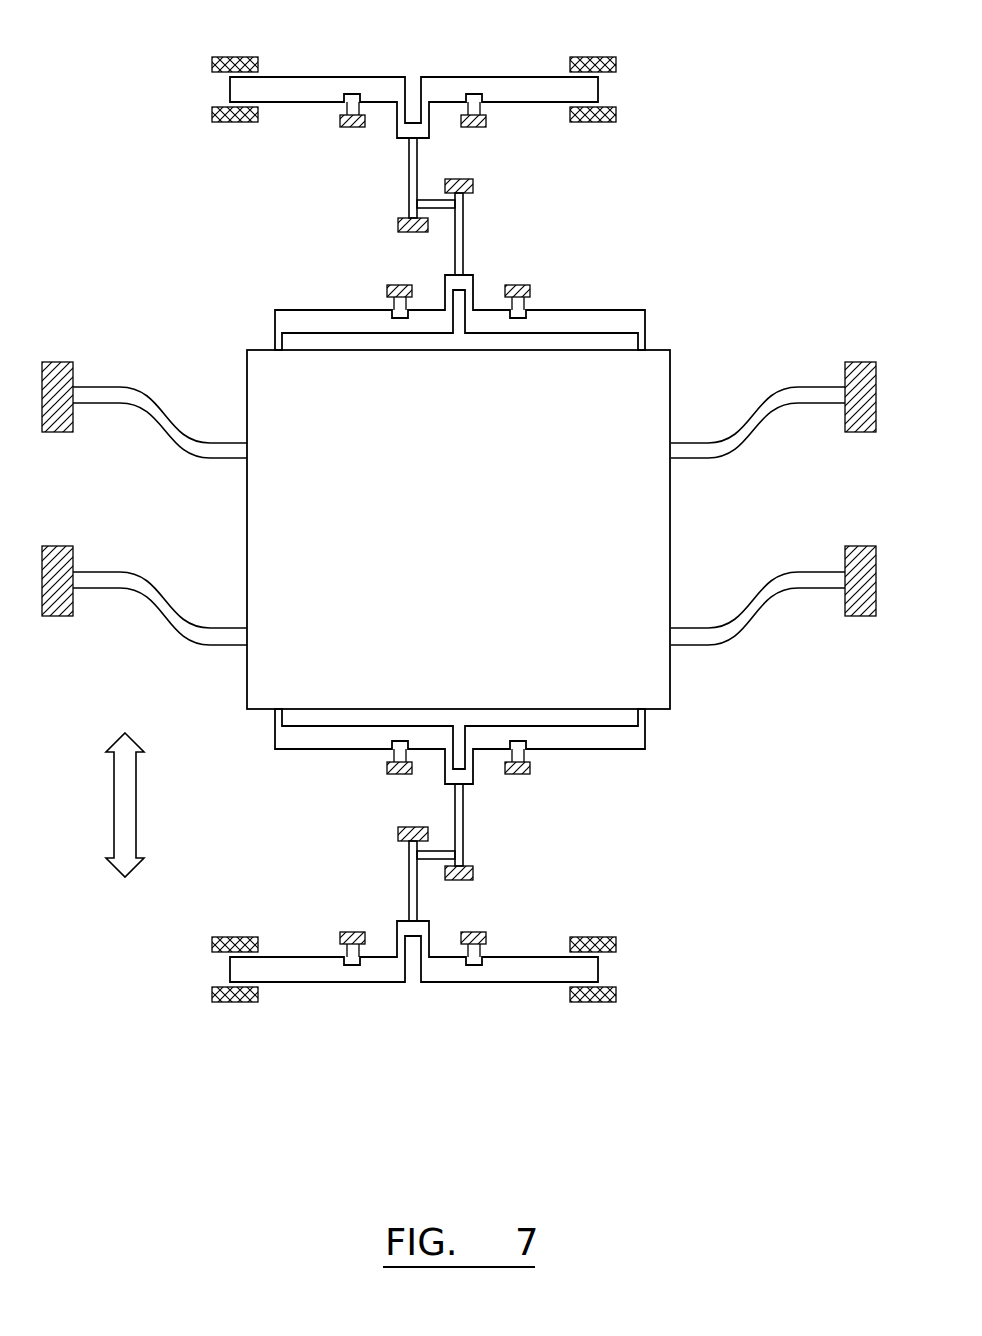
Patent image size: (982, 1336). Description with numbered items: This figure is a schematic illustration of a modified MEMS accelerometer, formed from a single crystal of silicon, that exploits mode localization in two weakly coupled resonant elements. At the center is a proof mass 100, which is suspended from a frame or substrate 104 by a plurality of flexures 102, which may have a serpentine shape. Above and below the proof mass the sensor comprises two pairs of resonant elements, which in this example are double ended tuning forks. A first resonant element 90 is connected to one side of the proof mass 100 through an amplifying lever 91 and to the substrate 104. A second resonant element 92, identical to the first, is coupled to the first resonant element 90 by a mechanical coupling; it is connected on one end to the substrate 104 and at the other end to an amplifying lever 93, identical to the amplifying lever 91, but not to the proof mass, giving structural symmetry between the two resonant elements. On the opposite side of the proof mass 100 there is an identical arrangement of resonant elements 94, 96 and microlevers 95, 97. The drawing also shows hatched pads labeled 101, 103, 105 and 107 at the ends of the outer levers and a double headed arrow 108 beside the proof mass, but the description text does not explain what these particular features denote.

The first resonant element 90 is at (463, 822).
The amplifying lever 91 is at (610, 750).
The second resonant element 92 is at (408, 882).
The amplifying lever 93 is at (317, 982).
The resonant element 94 is at (463, 233).
The microlever 95 is at (608, 310).
The resonant element 96 is at (410, 182).
The microlever 97 is at (315, 77).
The proof mass 100 is at (650, 670).
The lower electrode 101 is at (212, 945).
The flexures 102 is at (473, 188).
The lower electrode 103 is at (212, 995).
The frame or substrate 104 is at (137, 400).
The upper electrode 105 is at (212, 65).
The upper electrode 107 is at (212, 114).
The direction of motion arrow 108 is at (123, 812).